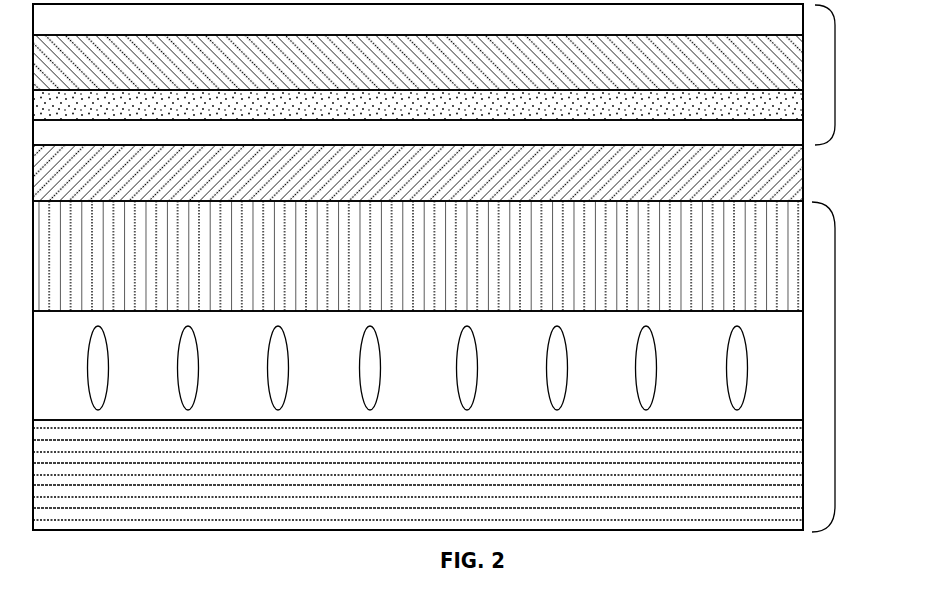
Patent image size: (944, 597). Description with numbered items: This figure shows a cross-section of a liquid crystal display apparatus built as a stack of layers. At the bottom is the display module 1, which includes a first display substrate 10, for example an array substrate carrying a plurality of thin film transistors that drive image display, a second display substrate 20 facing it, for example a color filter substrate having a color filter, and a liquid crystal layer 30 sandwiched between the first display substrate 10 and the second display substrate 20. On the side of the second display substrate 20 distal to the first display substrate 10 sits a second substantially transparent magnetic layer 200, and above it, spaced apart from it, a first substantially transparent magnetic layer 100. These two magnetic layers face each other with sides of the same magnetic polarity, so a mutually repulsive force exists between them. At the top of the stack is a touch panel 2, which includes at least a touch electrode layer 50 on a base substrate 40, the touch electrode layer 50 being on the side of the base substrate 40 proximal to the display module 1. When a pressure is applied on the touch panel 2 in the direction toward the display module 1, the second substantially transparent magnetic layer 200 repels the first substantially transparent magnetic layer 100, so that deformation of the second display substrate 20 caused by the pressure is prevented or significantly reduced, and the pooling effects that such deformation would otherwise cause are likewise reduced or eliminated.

The display module 1 is at (835, 365).
The touch panel 2 is at (835, 77).
The first display substrate 10 is at (418, 475).
The second display substrate 20 is at (418, 256).
The liquid crystal layer 30 is at (418, 365).
The base substrate 40 is at (418, 20).
The touch electrode layer 50 is at (418, 104).
The first substantially transparent magnetic layer 100 is at (418, 62).
The second substantially transparent magnetic layer 200 is at (418, 173).